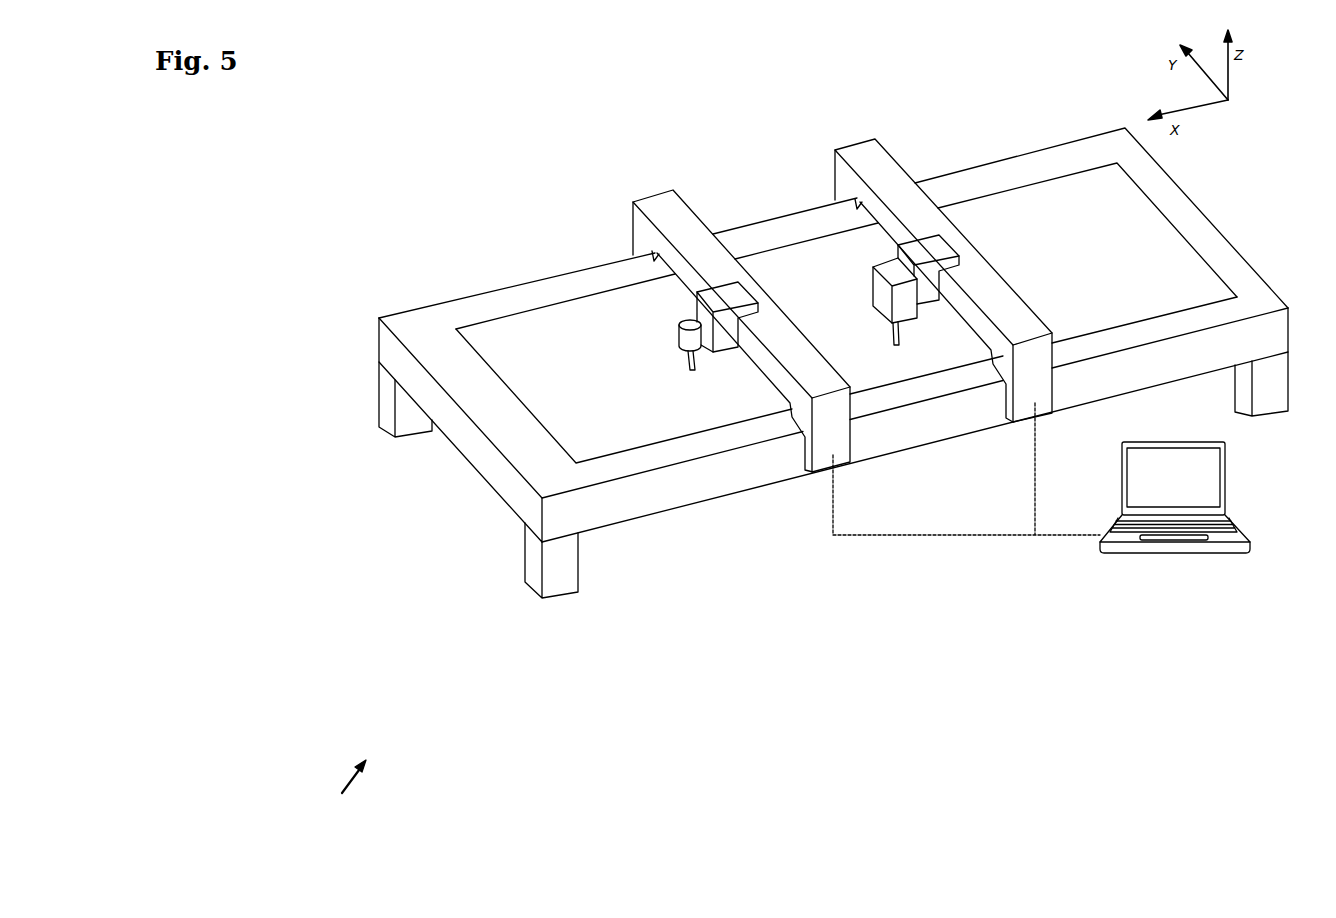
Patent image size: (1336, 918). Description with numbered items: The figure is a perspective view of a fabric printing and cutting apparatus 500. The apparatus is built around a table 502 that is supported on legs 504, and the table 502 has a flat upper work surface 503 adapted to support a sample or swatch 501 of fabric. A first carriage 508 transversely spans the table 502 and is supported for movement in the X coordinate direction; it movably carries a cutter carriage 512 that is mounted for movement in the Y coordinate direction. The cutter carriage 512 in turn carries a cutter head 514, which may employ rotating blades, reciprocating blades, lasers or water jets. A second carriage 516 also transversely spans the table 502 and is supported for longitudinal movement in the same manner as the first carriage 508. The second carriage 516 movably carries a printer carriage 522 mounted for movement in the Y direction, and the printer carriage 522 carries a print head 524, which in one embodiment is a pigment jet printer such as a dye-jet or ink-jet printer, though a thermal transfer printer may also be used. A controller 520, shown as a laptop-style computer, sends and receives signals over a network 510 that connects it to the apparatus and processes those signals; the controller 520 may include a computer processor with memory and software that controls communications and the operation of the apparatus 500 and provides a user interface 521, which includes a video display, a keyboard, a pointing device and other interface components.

The fabric printing and cutting apparatus 500 is at (345, 791).
The sample or swatch 501 is at (558, 330).
The table 502 is at (618, 503).
The flat upper work surface 503 is at (452, 318).
The legs 504 is at (410, 418).
The first carriage 508 is at (863, 155).
The network 510 is at (982, 537).
The cutter carriage 512 is at (935, 244).
The cutter head 514 is at (880, 291).
The second carriage 516 is at (664, 211).
The controller 520 is at (1206, 497).
The user interface 521 is at (1173, 478).
The printer carriage 522 is at (700, 311).
The print head 524 is at (680, 340).